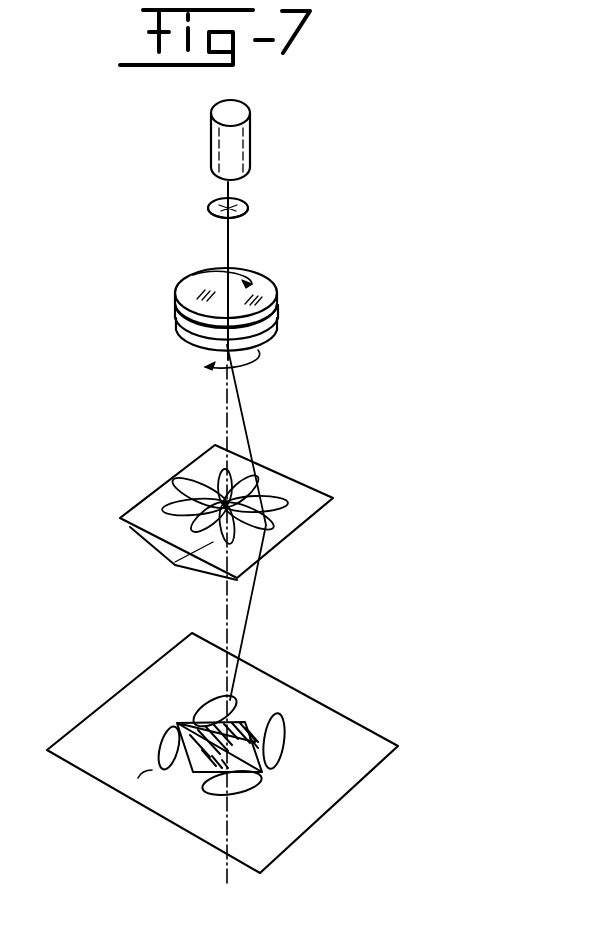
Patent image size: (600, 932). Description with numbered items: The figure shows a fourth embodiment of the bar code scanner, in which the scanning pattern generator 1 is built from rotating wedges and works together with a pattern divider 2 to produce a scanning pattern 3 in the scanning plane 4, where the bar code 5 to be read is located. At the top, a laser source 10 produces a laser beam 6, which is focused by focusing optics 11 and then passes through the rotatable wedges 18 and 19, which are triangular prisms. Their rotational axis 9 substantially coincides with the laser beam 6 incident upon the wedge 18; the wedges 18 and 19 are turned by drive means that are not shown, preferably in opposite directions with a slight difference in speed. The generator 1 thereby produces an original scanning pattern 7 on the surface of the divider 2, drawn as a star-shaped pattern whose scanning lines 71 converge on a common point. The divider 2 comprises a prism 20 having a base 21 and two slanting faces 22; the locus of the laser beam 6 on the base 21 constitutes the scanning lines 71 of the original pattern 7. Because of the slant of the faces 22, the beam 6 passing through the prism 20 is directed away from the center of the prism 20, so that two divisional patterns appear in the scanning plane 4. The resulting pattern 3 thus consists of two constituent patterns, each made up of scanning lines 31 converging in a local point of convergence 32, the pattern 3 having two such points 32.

The scanning pattern generator 1 is at (219, 318).
The scanning pattern divider 2 is at (232, 527).
The scanning pattern 3 is at (200, 747).
The scanning plane 4 is at (222, 753).
The bar code 5 is at (188, 775).
The laser beam 6 is at (229, 243).
The original scanning pattern 7 is at (209, 495).
The scanning lines 71 is at (176, 484).
The rotational axis 9 is at (226, 410).
The laser source 10 is at (250, 149).
The focusing optics 11 is at (248, 211).
The rotatable wedge 18 is at (276, 291).
The rotatable wedge 19 is at (270, 333).
The prism 20 is at (232, 523).
The base 21 is at (166, 540).
The slanting faces 22 is at (213, 570).
The scanning lines 31 is at (152, 773).
The local points of convergence 32 is at (177, 722).